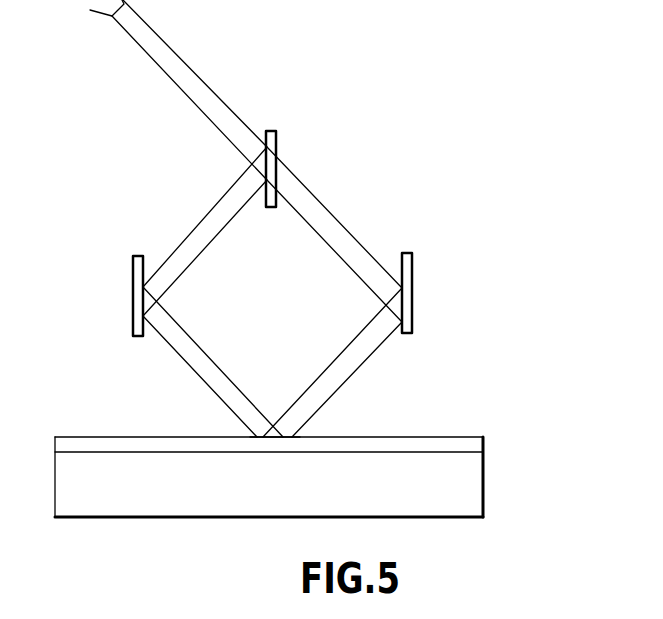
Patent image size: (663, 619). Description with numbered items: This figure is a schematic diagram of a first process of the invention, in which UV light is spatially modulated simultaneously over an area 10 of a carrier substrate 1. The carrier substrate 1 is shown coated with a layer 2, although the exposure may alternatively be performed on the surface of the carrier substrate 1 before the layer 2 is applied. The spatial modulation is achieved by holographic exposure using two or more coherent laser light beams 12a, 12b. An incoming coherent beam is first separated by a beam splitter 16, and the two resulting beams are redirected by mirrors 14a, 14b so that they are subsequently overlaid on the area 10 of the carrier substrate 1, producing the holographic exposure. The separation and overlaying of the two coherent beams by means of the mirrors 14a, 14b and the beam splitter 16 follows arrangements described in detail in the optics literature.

The carrier substrate 1 is at (470, 497).
The layer 2 is at (474, 444).
The area 10 is at (272, 443).
The coherent laser light beam 12a is at (196, 362).
The coherent laser light beam 12b is at (344, 363).
The mirror 14a is at (132, 262).
The mirror 14b is at (413, 263).
The beam splitter 16 is at (277, 142).